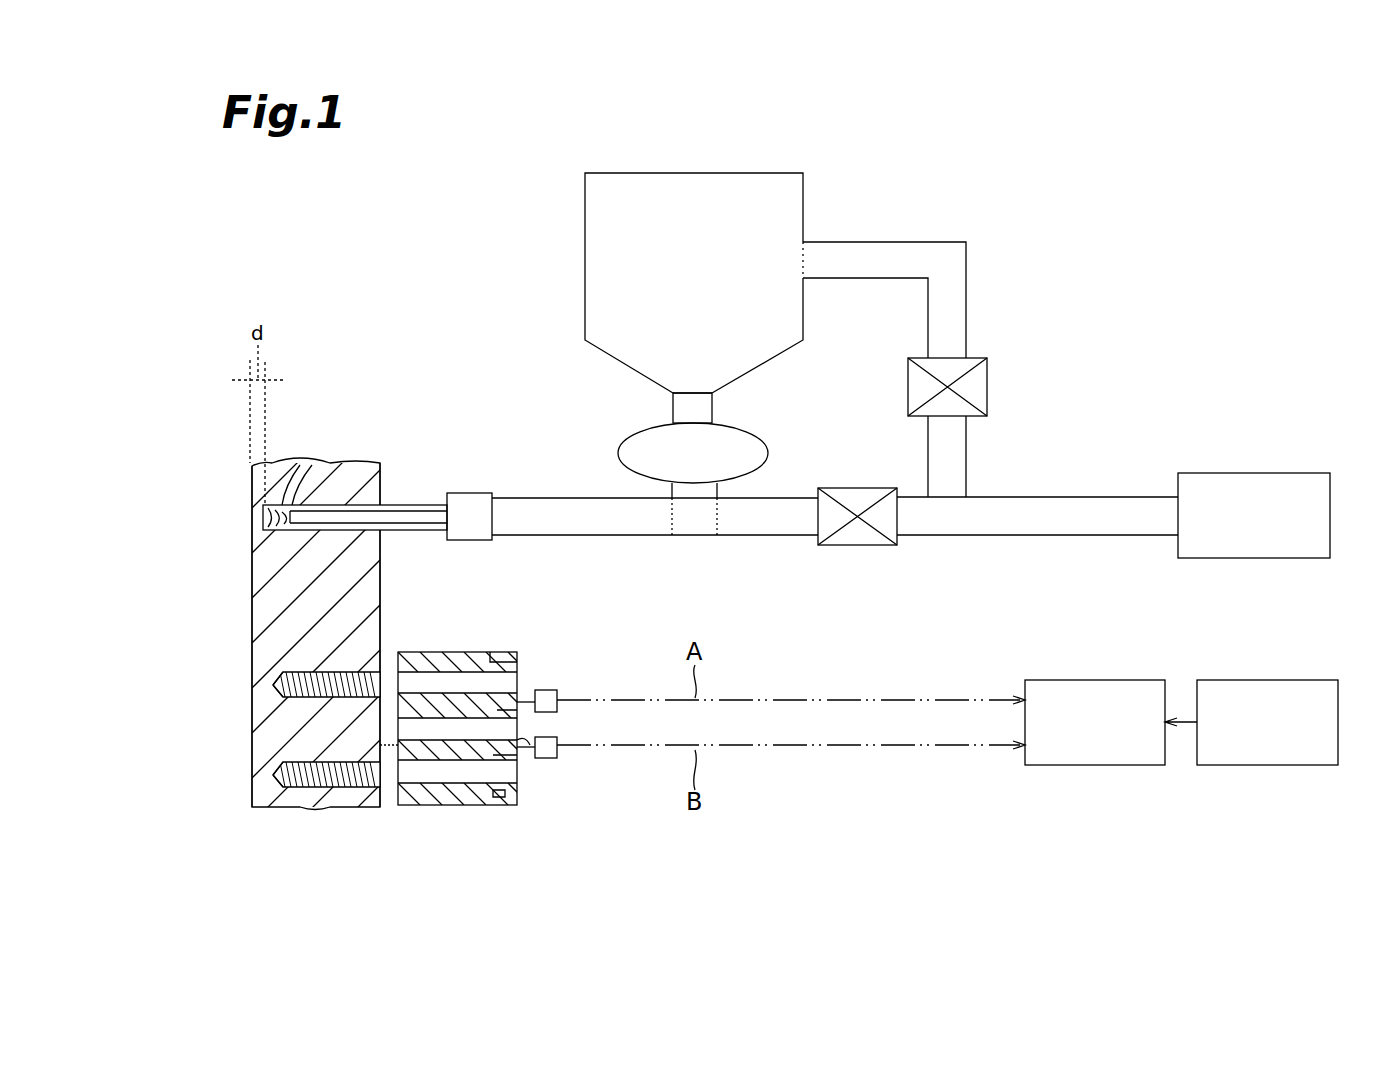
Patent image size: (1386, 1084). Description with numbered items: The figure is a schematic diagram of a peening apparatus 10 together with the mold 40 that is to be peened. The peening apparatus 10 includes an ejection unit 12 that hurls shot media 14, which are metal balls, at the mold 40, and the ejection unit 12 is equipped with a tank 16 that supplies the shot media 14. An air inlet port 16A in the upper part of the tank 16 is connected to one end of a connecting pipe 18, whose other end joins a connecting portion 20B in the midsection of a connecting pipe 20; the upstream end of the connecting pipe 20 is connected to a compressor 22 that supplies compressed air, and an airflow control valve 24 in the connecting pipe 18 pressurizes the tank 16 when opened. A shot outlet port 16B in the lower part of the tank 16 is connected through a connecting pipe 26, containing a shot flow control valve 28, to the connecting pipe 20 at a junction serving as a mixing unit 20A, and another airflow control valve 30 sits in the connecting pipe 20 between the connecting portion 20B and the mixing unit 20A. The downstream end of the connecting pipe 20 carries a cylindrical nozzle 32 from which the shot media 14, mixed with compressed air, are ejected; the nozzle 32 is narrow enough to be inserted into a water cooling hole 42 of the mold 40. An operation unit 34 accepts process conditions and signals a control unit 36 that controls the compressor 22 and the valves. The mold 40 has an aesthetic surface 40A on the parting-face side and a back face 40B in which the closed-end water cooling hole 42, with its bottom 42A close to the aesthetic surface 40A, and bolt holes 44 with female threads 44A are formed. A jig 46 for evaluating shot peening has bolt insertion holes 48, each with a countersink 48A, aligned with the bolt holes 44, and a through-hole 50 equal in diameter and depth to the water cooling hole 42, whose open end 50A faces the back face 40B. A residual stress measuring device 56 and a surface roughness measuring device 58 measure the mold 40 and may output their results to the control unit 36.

The peening apparatus 10 is at (705, 112).
The ejection unit 12 is at (911, 413).
The shot media 14 is at (290, 505).
The tank 16 is at (736, 298).
The air inlet port 16A is at (806, 280).
The shot outlet port 16B is at (673, 408).
The connecting pipe 18 is at (967, 312).
The connecting pipe 20 is at (1090, 536).
The mixing unit 20A is at (694, 538).
The connecting portion 20B is at (948, 510).
The compressor 22 is at (1255, 473).
The airflow control valve 24 is at (988, 388).
The connecting pipe 26 is at (714, 400).
The shot flow control valve 28 is at (760, 428).
The airflow control valve 30 is at (880, 546).
The nozzle 32 is at (445, 500).
The operation unit 34 is at (1265, 680).
The control unit 36 is at (1098, 680).
The mold 40 is at (388, 462).
The aesthetic surface 40A is at (252, 475).
The back face 40B is at (382, 590).
The water cooling hole 42 is at (355, 488).
The bottom 42A is at (270, 505).
The bolt hole 44 is at (322, 697).
The female thread 44A is at (272, 684).
The jig 46 is at (490, 711).
The bolt insertion hole 48 is at (470, 652).
The countersink 48A is at (512, 652).
The through-hole 50 is at (517, 740).
The open end 50A is at (388, 742).
The residual stress measuring device 56 is at (557, 692).
The surface roughness measuring device 58 is at (557, 755).